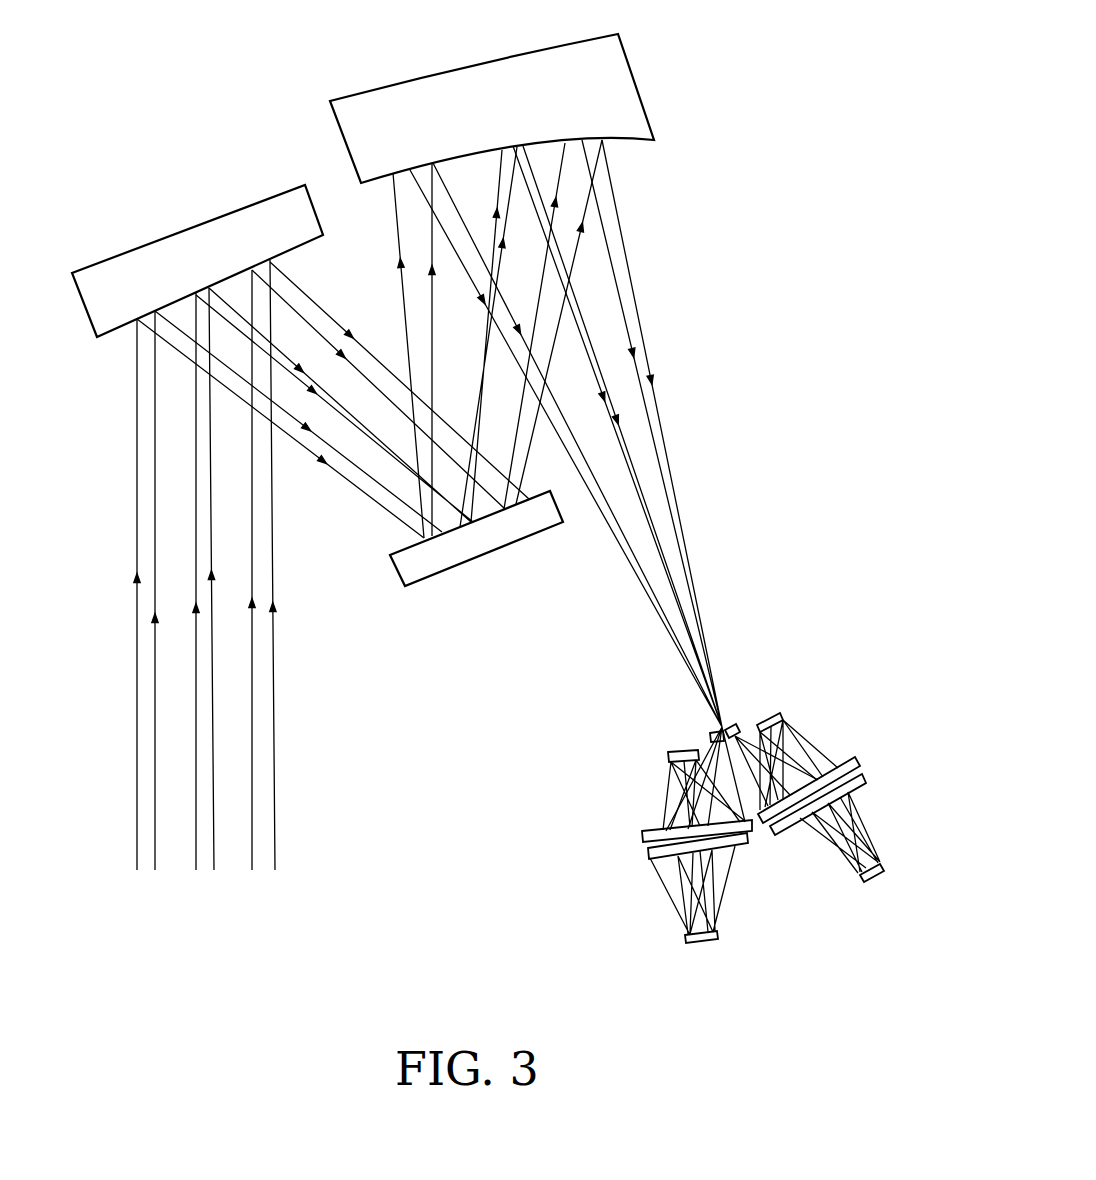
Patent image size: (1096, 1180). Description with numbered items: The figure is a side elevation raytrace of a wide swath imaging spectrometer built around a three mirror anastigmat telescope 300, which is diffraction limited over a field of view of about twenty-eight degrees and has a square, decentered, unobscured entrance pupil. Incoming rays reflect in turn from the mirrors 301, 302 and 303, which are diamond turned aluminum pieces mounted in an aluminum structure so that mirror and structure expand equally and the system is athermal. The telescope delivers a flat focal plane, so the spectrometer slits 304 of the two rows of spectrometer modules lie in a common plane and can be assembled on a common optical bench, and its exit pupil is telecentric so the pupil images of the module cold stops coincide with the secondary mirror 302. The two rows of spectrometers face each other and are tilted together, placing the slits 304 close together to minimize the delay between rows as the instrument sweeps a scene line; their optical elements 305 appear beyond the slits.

The telescope 300 is at (308, 45).
The mirror 301 is at (220, 217).
The secondary mirror 302 is at (500, 548).
The mirror 303 is at (639, 90).
The spectrometer slits 304 is at (730, 722).
The optical elements of the spectrometers 305 is at (897, 872).